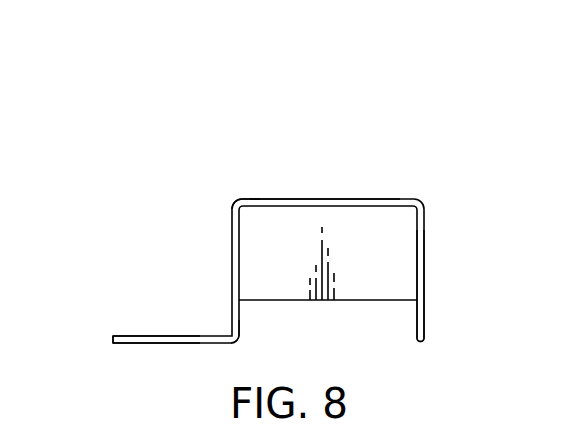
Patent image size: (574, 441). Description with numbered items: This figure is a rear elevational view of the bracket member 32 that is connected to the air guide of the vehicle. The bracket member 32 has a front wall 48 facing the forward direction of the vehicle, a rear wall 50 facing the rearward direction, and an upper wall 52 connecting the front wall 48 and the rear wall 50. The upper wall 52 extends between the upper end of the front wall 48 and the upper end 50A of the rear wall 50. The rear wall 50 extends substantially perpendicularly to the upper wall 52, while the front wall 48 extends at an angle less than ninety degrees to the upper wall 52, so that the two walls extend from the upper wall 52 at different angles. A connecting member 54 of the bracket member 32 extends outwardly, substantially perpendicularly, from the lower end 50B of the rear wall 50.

The bracket member 32 is at (300, 198).
The front wall 48 is at (425, 246).
The rear wall 50 is at (232, 258).
The upper end of the rear wall 50A is at (237, 198).
The lower end of the rear wall 50B is at (231, 332).
The upper wall 52 is at (371, 197).
The connecting member 54 is at (145, 335).